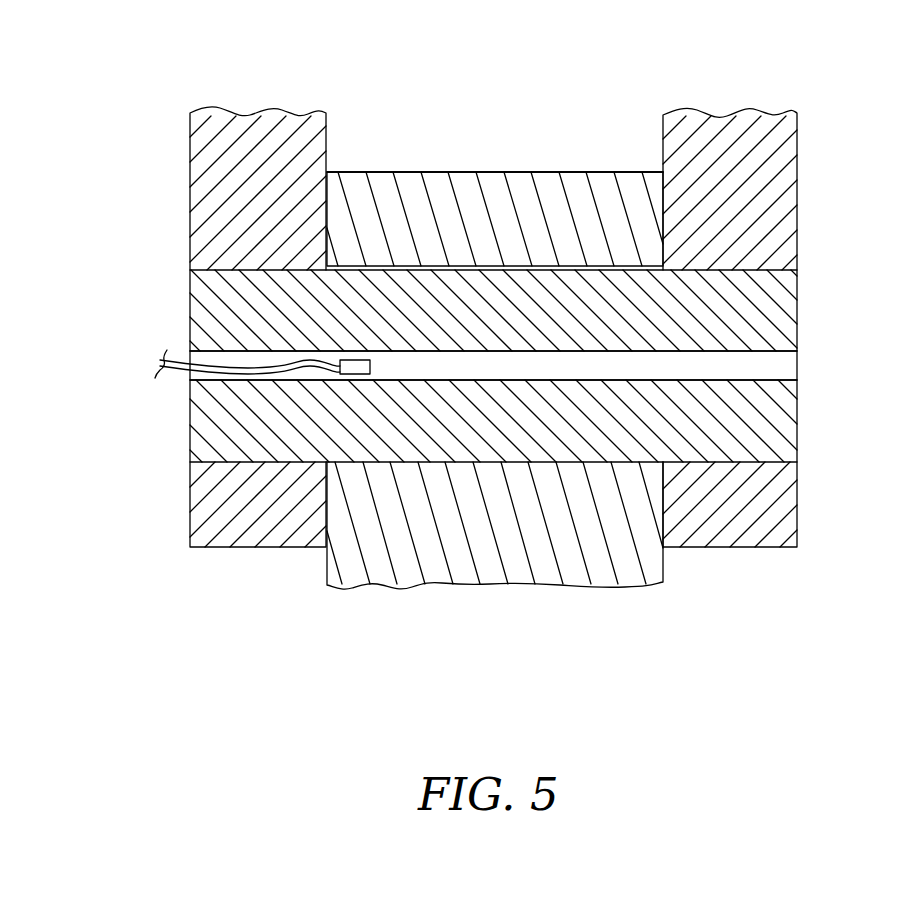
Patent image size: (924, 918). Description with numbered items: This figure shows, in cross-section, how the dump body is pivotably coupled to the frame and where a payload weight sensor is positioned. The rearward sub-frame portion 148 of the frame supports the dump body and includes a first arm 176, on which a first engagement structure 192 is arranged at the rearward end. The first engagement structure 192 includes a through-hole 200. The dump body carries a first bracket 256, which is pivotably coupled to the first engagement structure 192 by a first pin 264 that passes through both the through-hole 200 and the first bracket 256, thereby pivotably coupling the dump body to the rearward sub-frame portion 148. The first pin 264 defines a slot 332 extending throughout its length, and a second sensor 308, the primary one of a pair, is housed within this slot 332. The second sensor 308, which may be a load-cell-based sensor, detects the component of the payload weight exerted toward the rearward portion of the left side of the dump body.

The rearward sub-frame portion 148 is at (485, 172).
The first arm 176 is at (387, 172).
The first engagement structure 192 is at (440, 172).
The through-hole 200 is at (538, 268).
The first bracket 256 is at (797, 168).
The first pin 264 is at (597, 268).
The second sensor 308 is at (353, 360).
The slot 332 is at (708, 380).